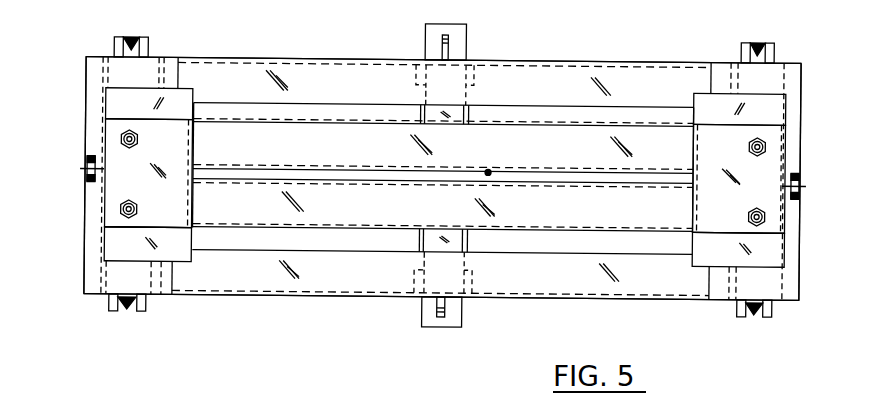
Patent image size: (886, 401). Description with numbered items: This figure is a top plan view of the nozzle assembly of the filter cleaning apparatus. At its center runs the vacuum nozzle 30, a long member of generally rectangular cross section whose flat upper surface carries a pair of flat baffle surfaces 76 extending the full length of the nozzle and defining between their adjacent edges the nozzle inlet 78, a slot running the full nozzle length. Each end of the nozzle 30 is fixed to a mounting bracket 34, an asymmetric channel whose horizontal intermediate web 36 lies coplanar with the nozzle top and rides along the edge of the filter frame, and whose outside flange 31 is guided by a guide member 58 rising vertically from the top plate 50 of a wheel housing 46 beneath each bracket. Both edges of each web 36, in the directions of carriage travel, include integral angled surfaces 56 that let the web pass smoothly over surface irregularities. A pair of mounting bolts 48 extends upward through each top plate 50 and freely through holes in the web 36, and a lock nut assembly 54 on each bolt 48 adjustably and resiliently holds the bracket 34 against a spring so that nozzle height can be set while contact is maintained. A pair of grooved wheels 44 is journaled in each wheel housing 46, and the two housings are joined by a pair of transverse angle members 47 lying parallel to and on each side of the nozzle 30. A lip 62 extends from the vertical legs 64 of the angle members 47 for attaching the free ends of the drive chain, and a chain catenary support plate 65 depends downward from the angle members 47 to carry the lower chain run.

The vacuum nozzle 30 is at (402, 217).
The outside flange 31 is at (104, 208).
The mounting bracket 34 is at (110, 128).
The intermediate web 36 is at (175, 222).
The grooved wheels 44 is at (150, 43).
The wheel housing 46 is at (100, 268).
The transverse angle members 47 is at (575, 80).
The mounting bolts 48 is at (124, 138).
The top plate 50 is at (92, 192).
The lock nut assembly 54 is at (767, 146).
The angled surfaces 56 is at (180, 92).
The guide member 58 is at (86, 164).
The lip 62 is at (449, 46).
The vertical legs 64 is at (515, 60).
The chain catenary support plate 65 is at (464, 322).
The baffle surfaces 76 is at (287, 197).
The nozzle inlet 78 is at (490, 171).